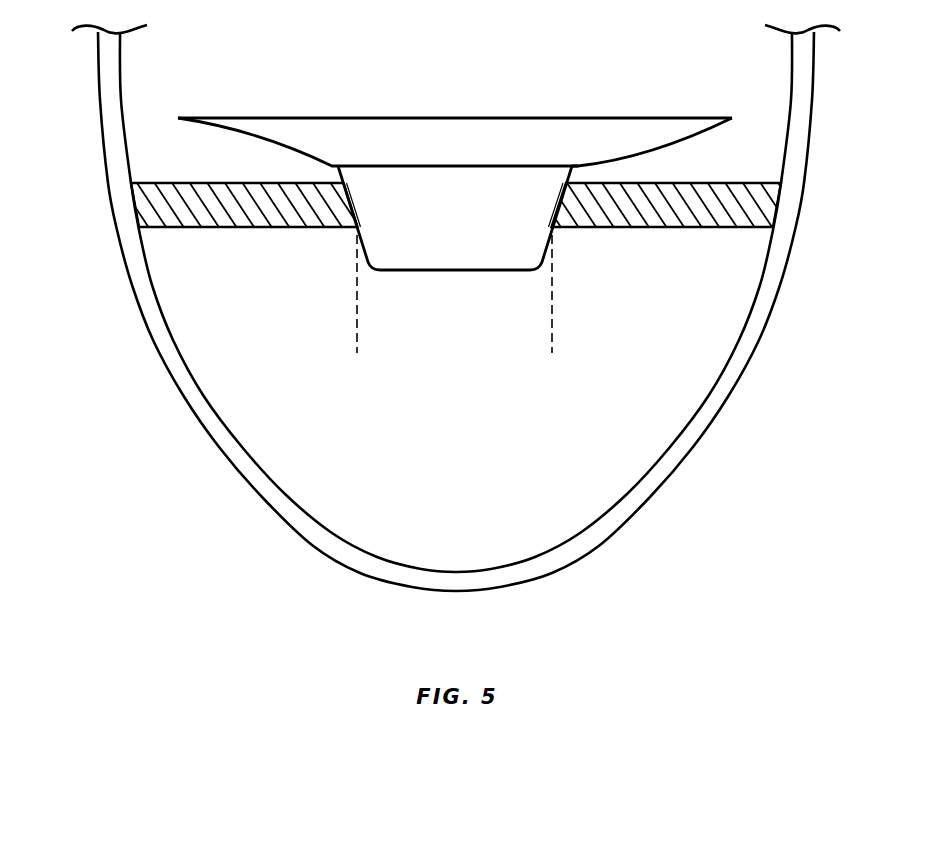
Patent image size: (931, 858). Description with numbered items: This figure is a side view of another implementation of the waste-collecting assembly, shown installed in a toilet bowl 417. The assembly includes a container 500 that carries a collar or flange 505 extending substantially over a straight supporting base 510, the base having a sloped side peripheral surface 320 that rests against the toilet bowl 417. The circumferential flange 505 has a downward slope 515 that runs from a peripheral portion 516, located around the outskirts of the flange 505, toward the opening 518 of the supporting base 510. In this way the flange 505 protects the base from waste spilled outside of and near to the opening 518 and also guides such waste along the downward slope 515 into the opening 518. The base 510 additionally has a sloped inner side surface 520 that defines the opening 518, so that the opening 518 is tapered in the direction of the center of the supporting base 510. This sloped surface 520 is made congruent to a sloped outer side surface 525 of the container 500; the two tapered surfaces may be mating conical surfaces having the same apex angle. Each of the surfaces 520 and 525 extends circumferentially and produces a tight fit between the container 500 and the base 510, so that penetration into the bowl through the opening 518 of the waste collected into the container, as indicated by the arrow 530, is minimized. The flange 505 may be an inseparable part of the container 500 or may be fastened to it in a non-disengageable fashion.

The toilet bowl 417 is at (692, 447).
The sloped side peripheral surface 320 is at (114, 206).
The collar or flange 505 is at (252, 131).
The downward slope 515 is at (623, 136).
The peripheral portion 516 is at (729, 106).
The straight supporting base 510 is at (235, 218).
The container 500 is at (510, 257).
The sloped inner side surface 520 is at (545, 199).
The sloped outer side surface 525 is at (370, 280).
The opening 518 is at (357, 363).
The arrow 530 is at (458, 72).